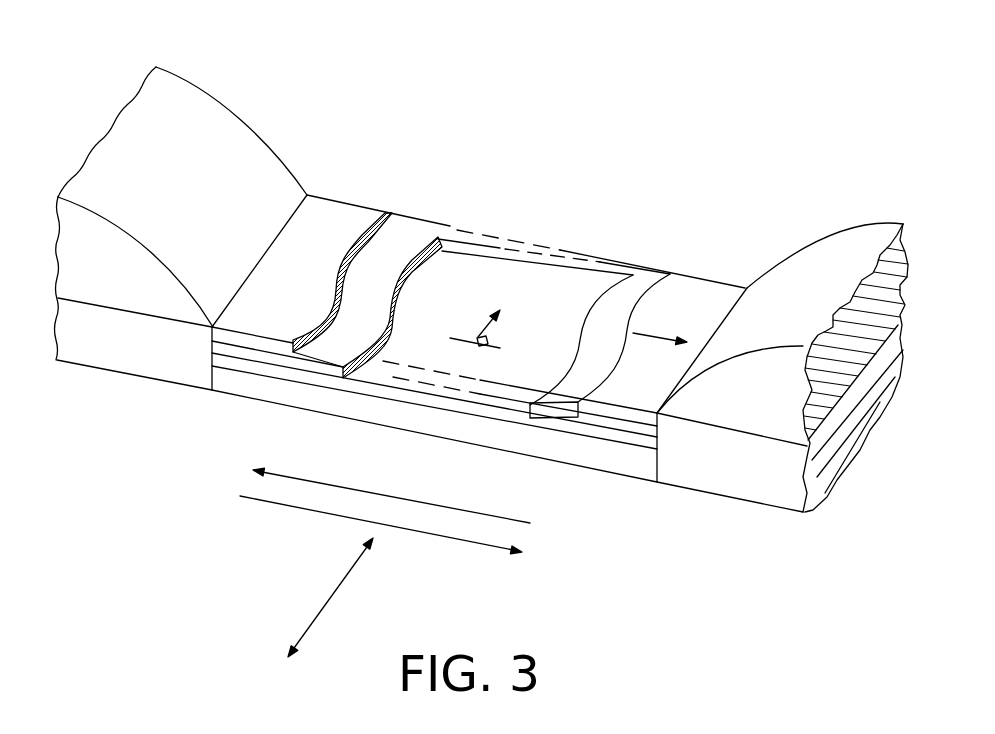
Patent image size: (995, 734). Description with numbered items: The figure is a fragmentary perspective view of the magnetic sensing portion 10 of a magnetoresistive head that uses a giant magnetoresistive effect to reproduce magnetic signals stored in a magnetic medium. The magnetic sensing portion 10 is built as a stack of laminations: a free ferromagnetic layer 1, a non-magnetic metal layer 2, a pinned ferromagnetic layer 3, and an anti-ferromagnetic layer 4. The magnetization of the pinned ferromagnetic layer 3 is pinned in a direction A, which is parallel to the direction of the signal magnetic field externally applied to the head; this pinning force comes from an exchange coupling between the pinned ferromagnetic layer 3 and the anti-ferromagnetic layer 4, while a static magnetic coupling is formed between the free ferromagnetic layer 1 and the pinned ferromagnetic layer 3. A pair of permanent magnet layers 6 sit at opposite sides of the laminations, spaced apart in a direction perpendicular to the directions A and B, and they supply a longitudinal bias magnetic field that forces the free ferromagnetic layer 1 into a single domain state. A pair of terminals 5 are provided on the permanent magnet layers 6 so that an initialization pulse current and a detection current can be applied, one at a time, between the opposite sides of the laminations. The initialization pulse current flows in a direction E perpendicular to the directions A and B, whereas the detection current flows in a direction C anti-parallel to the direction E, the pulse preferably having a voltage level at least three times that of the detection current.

The free ferromagnetic layer 1 is at (337, 217).
The non-magnetic metal layer 2 is at (401, 235).
The pinned ferromagnetic layer 3 is at (558, 287).
The anti-ferromagnetic layer 4 is at (273, 391).
The terminals 5 is at (222, 120).
The permanent magnet layers 6 is at (105, 357).
The magnetic sensing portion 10 is at (752, 168).
The direction A is at (478, 337).
The direction B is at (317, 613).
The direction C is at (520, 525).
The direction E is at (470, 545).